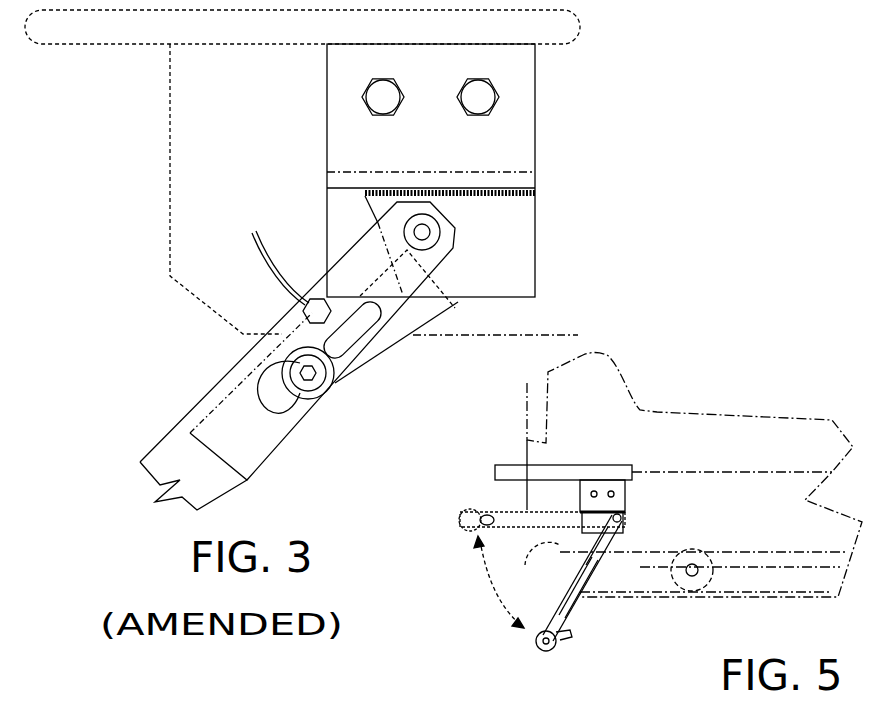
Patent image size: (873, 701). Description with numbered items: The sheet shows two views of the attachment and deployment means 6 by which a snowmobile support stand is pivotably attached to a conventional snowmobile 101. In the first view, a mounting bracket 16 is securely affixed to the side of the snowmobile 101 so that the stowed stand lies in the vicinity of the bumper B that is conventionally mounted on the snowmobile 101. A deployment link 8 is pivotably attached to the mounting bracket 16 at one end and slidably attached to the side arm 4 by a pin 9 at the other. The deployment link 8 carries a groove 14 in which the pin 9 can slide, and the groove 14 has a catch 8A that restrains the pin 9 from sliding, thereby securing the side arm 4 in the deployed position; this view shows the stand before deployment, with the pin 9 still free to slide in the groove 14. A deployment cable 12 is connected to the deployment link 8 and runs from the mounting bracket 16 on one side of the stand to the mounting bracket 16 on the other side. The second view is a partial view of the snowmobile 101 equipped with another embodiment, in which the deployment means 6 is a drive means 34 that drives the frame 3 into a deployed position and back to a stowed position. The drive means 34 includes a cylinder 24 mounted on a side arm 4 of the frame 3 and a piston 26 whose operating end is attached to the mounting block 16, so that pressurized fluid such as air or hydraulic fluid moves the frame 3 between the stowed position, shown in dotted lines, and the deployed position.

In FIG. 3, the bumper B is at (100, 34).
In FIG. 5, the bumper B is at (497, 478).
In FIG. 3, the snowmobile 101 is at (264, 112).
In FIG. 5, the snowmobile 101 is at (748, 445).
In FIG. 3, the mounting bracket 16 is at (520, 138).
In FIG. 3, the deployment cable 12 is at (272, 280).
In FIG. 3, the attachment and deployment means 6 is at (207, 350).
In FIG. 5, the attachment and deployment means 6 is at (644, 518).
In FIG. 3, the groove 14 is at (353, 323).
In FIG. 3, the side arm 4 is at (177, 447).
In FIG. 5, the side arm 4 is at (540, 620).
In FIG. 3, the pin 9 is at (300, 387).
In FIG. 3, the catch 8A is at (280, 398).
In FIG. 3, the deployment link 8 is at (256, 446).
In FIG. 5, the frame 3 is at (552, 645).
In FIG. 5, the piston 26 is at (580, 600).
In FIG. 5, the drive means 34 is at (597, 565).
In FIG. 5, the cylinder 24 is at (620, 523).